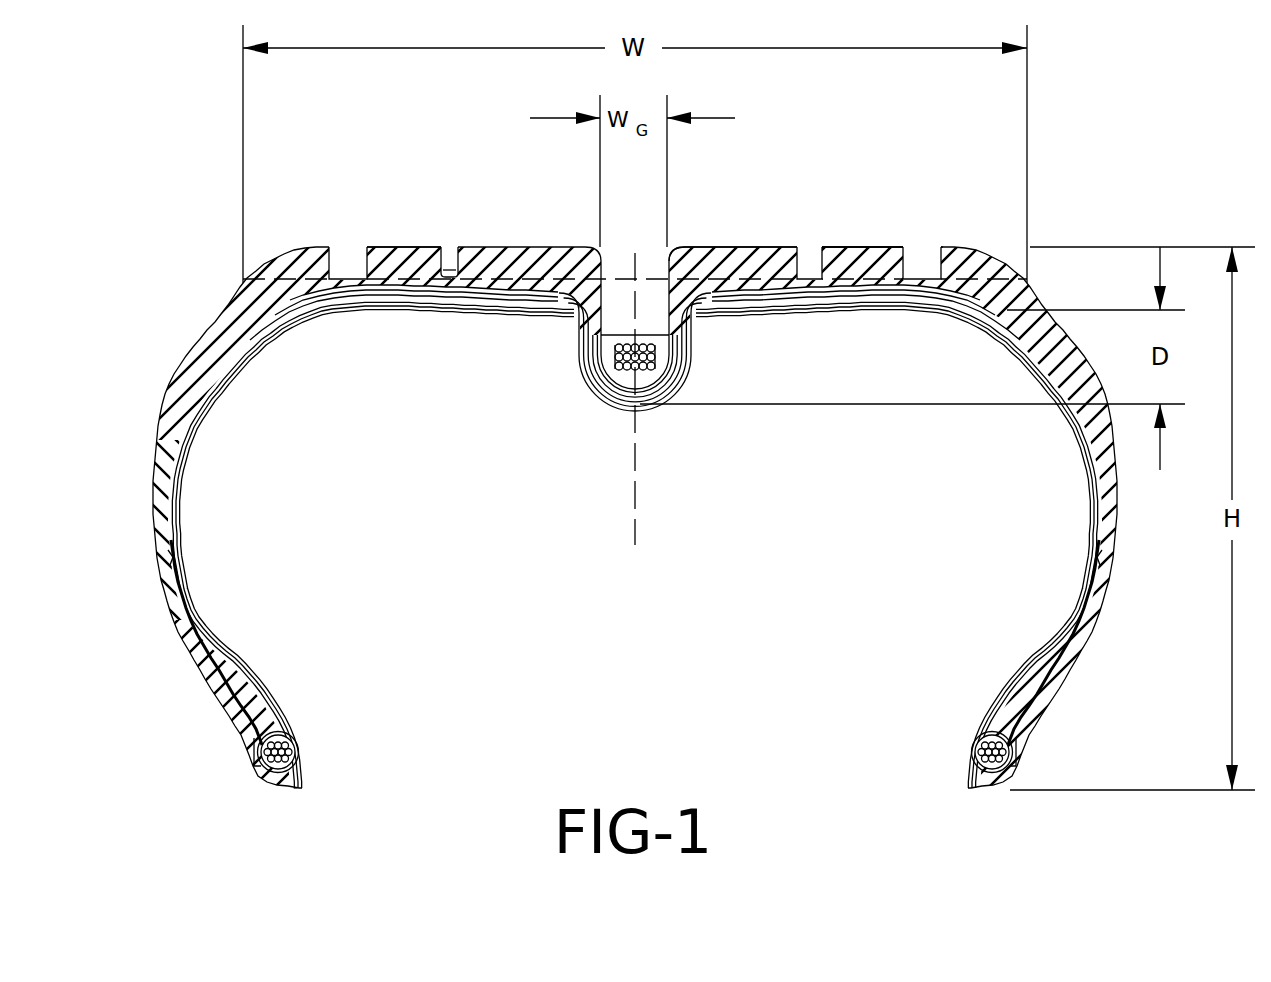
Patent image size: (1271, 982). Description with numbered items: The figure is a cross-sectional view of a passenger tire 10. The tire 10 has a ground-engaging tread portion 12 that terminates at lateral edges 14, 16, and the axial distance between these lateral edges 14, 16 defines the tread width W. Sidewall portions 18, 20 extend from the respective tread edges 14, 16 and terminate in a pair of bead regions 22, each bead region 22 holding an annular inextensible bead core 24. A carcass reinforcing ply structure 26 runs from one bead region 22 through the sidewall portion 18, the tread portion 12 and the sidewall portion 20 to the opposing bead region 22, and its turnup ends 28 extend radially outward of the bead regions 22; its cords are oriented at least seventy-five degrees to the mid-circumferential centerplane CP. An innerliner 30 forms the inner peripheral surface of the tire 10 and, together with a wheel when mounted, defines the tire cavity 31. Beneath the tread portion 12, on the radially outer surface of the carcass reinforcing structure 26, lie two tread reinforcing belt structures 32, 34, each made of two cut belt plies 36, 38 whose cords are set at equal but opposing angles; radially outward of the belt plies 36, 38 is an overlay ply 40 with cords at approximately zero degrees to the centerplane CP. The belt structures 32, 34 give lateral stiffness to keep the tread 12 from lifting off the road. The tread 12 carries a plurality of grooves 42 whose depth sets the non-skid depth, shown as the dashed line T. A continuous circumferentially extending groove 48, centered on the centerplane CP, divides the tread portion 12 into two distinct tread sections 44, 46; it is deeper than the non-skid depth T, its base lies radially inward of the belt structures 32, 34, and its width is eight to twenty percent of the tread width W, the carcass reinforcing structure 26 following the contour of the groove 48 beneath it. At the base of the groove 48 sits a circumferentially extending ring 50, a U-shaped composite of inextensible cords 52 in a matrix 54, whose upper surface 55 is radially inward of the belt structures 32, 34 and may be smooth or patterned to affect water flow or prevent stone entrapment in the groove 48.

The tire 10 is at (635, 435).
The tread portion 12 is at (878, 250).
The lateral edge 14 is at (245, 278).
The lateral edge 16 is at (1024, 280).
The sidewall portion 18 is at (576, 489).
The sidewall portion 20 is at (694, 489).
The bead region 22 is at (276, 690).
The bead core 24 is at (270, 749).
The carcass reinforcing ply structure 26 is at (168, 478).
The turnup ends 28 is at (173, 557).
The innerliner 30 is at (580, 357).
The tire cavity 31 is at (846, 490).
The belt structure 32 is at (456, 268).
The belt structure 34 is at (959, 280).
The belt ply 36 is at (493, 303).
The belt ply 38 is at (537, 297).
The overlay ply 40 is at (438, 250).
The grooves 42 is at (352, 272).
The tread section 44 is at (377, 250).
The tread section 46 is at (822, 252).
The circumferentially extending groove 48 is at (613, 270).
The ring 50 is at (642, 318).
The inextensible cords 52 is at (626, 390).
The matrix 54 is at (675, 364).
The upper surface 55 is at (662, 328).
The non-skid depth T is at (708, 250).
The mid-circumferential centerplane CP is at (635, 523).